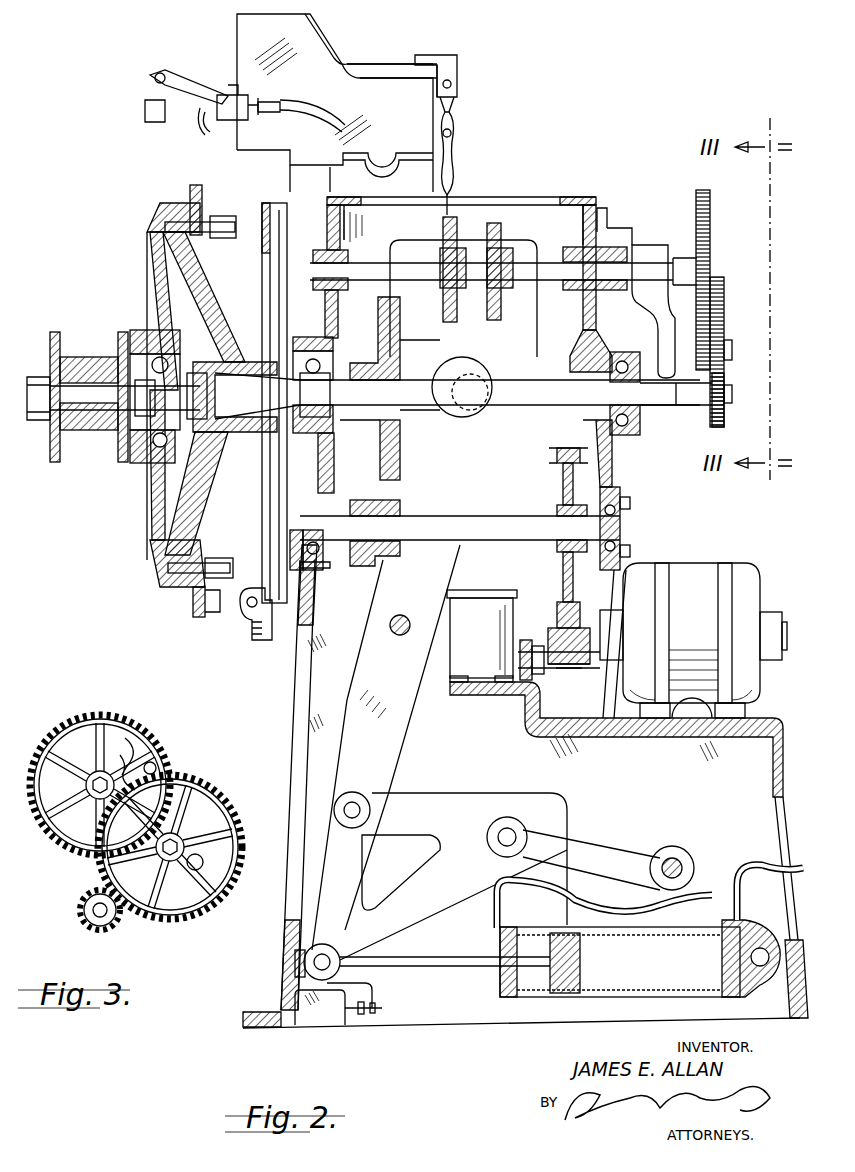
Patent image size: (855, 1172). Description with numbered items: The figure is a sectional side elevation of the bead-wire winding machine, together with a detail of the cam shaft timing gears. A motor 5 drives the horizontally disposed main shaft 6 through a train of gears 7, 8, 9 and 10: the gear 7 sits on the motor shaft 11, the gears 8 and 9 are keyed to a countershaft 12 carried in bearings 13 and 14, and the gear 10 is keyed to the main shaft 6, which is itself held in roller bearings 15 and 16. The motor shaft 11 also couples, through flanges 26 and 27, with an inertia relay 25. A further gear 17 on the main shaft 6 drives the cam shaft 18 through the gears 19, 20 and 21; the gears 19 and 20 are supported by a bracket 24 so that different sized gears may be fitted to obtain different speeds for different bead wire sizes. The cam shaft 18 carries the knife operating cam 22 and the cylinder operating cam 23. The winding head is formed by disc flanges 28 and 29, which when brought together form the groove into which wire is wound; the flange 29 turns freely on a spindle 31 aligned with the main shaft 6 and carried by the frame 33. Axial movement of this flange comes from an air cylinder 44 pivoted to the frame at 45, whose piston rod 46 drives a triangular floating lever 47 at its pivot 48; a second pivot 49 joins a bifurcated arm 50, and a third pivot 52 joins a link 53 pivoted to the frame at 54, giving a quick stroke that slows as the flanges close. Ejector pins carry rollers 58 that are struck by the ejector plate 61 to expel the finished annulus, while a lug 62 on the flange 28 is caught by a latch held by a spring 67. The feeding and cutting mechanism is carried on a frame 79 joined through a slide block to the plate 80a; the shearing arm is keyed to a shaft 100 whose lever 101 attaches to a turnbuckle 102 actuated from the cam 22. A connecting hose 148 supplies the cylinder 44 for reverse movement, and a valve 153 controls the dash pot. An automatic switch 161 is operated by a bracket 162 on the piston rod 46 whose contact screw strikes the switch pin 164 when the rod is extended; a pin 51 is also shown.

In FIG. 2, the motor 5 is at (695, 566).
In FIG. 2, the main shaft 6 is at (507, 380).
In FIG. 2, the gear 7 is at (582, 616).
In FIG. 2, the gear 8 is at (563, 486).
In FIG. 2, the gear 9 is at (398, 508).
In FIG. 2, the gear 10 is at (404, 456).
In FIG. 2, the motor shaft 11 is at (570, 668).
In FIG. 2, the countershaft 12 is at (500, 516).
In FIG. 2, the bearing 13 is at (322, 568).
In FIG. 2, the bearing 14 is at (630, 517).
In FIG. 2, the roller bearing 15 is at (315, 345).
In FIG. 2, the roller bearing 16 is at (632, 350).
In FIG. 2, the gear 17 is at (724, 407).
In FIG. 3, the gear 17 is at (80, 912).
In FIG. 2, the cam shaft 18 is at (540, 263).
In FIG. 2, the gear 19 is at (724, 300).
In FIG. 3, the gear 19 is at (150, 926).
In FIG. 2, the gear 20 is at (705, 396).
In FIG. 3, the gear 20 is at (186, 838).
In FIG. 2, the gear 21 is at (700, 200).
In FIG. 3, the gear 21 is at (70, 721).
In FIG. 2, the knife operating cam 22 is at (452, 225).
In FIG. 2, the cylinder operating cam 23 is at (497, 228).
In FIG. 2, the bracket 24 is at (648, 250).
In FIG. 3, the bracket 24 is at (132, 740).
In FIG. 2, the inertia relay 25 is at (482, 636).
In FIG. 2, the flange 26 is at (545, 640).
In FIG. 2, the flange 27 is at (522, 640).
In FIG. 2, the disc flange 28 is at (180, 210).
In FIG. 2, the disc flange 29 is at (150, 241).
In FIG. 2, the spindle 31 is at (92, 386).
In FIG. 2, the frame 33 is at (66, 358).
In FIG. 2, the air cylinder 44 is at (612, 986).
In FIG. 2, the pivot 45 is at (752, 990).
In FIG. 2, the piston rod 46 is at (466, 975).
In FIG. 2, the triangular floating lever 47 is at (310, 895).
In FIG. 2, the pivot 48 is at (304, 962).
In FIG. 2, the pivot 49 is at (355, 801).
In FIG. 2, the bifurcated arm 50 is at (366, 666).
In FIG. 2, the pin 51 is at (390, 625).
In FIG. 2, the pivot 52 is at (514, 834).
In FIG. 2, the link 53 is at (600, 846).
In FIG. 2, the pivot 54 is at (678, 860).
In FIG. 2, the roller 58 is at (232, 560).
In FIG. 2, the ejector plate 61 is at (263, 265).
In FIG. 2, the lug 62 is at (212, 618).
In FIG. 2, the spring 67 is at (243, 642).
In FIG. 2, the frame 79 is at (240, 33).
In FIG. 2, the plate 80a is at (330, 183).
In FIG. 2, the shaft 100 is at (385, 70).
In FIG. 2, the lever 101 is at (458, 68).
In FIG. 2, the turnbuckle 102 is at (458, 150).
In FIG. 2, the connecting hose 148 is at (758, 865).
In FIG. 2, the valve 153 is at (240, 118).
In FIG. 2, the automatic switch 161 is at (318, 1024).
In FIG. 2, the bracket 162 is at (374, 996).
In FIG. 2, the switch pin 164 is at (361, 1018).